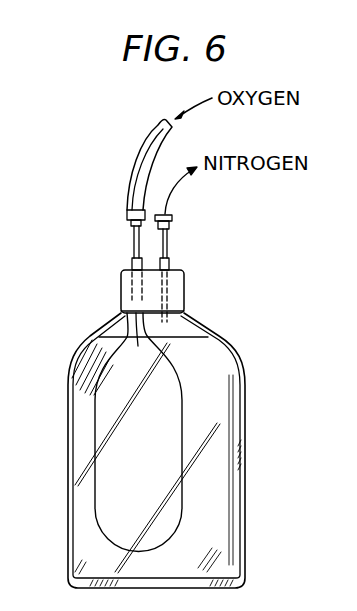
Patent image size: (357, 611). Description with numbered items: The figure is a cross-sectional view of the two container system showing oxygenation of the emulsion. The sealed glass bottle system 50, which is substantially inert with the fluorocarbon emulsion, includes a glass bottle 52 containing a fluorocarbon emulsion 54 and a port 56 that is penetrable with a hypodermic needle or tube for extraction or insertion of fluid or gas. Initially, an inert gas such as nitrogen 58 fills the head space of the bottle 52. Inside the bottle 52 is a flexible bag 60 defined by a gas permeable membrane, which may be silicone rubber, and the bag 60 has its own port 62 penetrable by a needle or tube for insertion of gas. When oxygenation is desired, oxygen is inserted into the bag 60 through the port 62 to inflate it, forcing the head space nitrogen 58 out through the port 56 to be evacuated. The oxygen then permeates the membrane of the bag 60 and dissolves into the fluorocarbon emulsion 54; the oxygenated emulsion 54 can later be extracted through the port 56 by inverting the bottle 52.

The sealed glass bottle system 50 is at (90, 333).
The glass bottle 52 is at (243, 442).
The fluorocarbon emulsion 54 is at (215, 400).
The port 56 is at (170, 262).
The nitrogen 58 is at (190, 323).
The flexible bag 60 is at (163, 526).
The port 62 is at (130, 262).